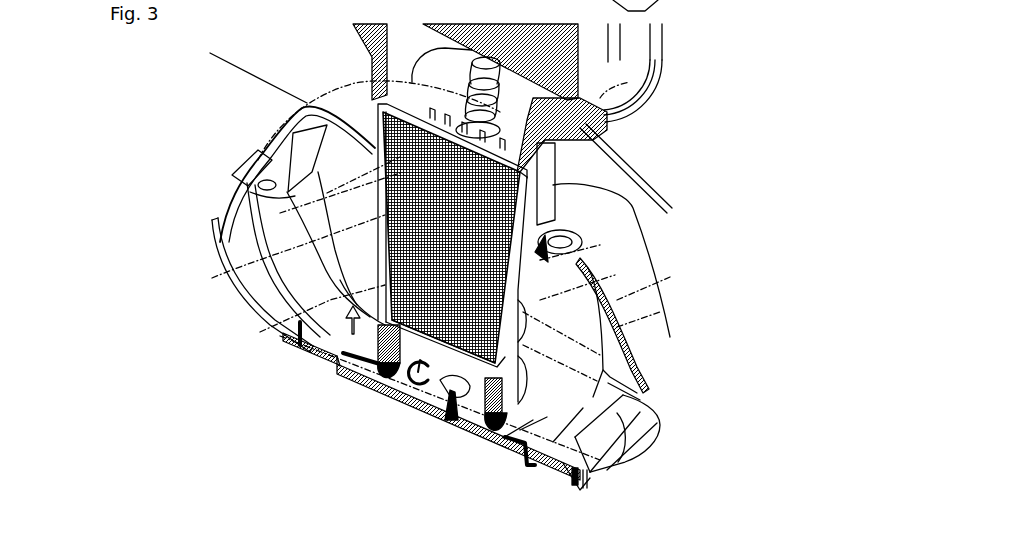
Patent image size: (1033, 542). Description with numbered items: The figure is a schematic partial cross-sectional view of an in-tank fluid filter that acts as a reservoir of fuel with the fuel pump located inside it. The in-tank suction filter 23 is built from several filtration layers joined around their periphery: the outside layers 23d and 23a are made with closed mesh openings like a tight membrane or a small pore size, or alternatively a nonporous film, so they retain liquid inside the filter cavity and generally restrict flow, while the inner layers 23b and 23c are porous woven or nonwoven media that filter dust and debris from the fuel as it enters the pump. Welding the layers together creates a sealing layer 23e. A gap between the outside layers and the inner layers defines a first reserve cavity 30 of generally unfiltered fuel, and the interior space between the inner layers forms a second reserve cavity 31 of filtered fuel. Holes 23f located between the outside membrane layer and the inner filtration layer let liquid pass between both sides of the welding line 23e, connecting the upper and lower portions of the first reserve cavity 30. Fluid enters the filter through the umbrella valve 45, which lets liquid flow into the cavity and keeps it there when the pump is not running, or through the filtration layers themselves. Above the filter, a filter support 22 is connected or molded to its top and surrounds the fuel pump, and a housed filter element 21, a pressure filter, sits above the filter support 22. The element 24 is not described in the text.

The housed filter element 21 is at (513, 43).
The filter support 22 is at (553, 118).
The mounting post with eyelet 24 is at (569, 240).
The in-tank suction filter 23 is at (97, 168).
The outside layer 23a is at (284, 308).
The inner layer 23b is at (327, 263).
The inner layer 23c is at (284, 180).
The outside layer 23d is at (274, 153).
The sealing layer 23e is at (652, 390).
The holes 23f is at (310, 159).
The first reserve cavity 30 is at (607, 438).
The second reserve cavity 31 is at (353, 276).
The umbrella valve 45 is at (452, 387).